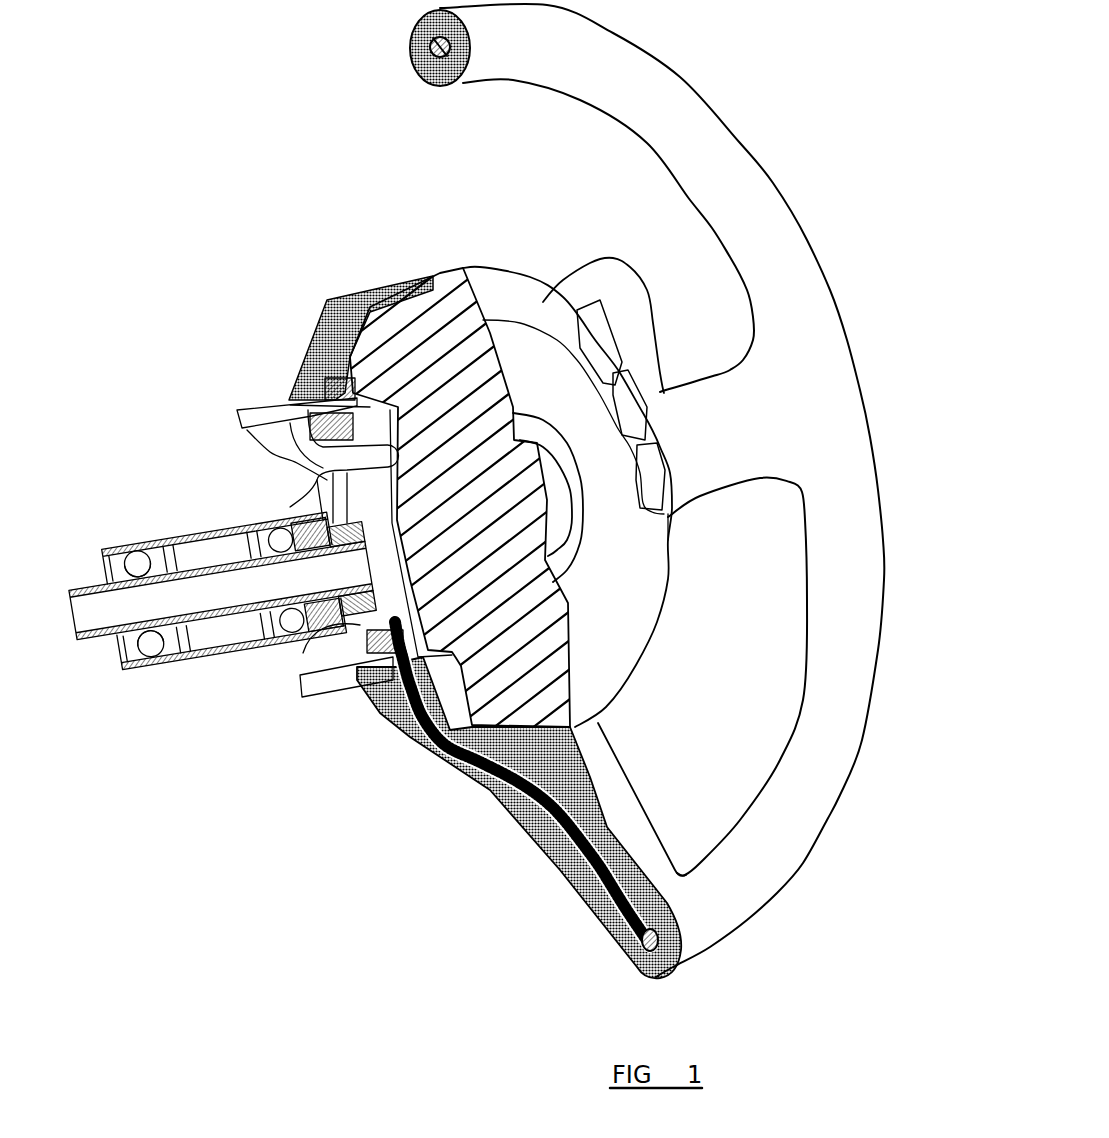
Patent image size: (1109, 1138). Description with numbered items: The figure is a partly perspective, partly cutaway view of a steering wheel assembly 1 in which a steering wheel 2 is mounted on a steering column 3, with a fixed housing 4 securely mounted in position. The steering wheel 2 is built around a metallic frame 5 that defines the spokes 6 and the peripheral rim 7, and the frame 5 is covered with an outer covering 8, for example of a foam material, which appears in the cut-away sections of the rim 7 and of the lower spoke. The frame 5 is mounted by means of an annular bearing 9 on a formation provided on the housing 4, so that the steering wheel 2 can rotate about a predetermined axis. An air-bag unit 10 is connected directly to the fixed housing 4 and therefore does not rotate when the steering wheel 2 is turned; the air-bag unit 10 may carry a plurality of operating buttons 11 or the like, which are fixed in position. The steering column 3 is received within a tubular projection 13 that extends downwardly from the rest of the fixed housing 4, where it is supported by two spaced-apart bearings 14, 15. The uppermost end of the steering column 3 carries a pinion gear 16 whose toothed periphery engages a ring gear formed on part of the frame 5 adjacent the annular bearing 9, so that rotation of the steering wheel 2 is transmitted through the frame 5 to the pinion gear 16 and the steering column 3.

The steering wheel assembly 1 is at (245, 138).
The steering wheel 2 is at (543, 900).
The steering column 3 is at (85, 640).
The fixed housing 4 is at (300, 660).
The metallic frame 5 is at (443, 88).
The spokes 6 is at (718, 397).
The peripheral rim 7 is at (793, 837).
The outer covering 8 is at (410, 60).
The annular bearing 9 is at (297, 377).
The air-bag unit 10 is at (483, 540).
The operating buttons 11 is at (632, 397).
The tubular projection 13 is at (187, 660).
The bearing 14 is at (137, 640).
The bearing 15 is at (257, 523).
The pinion gear 16 is at (323, 480).